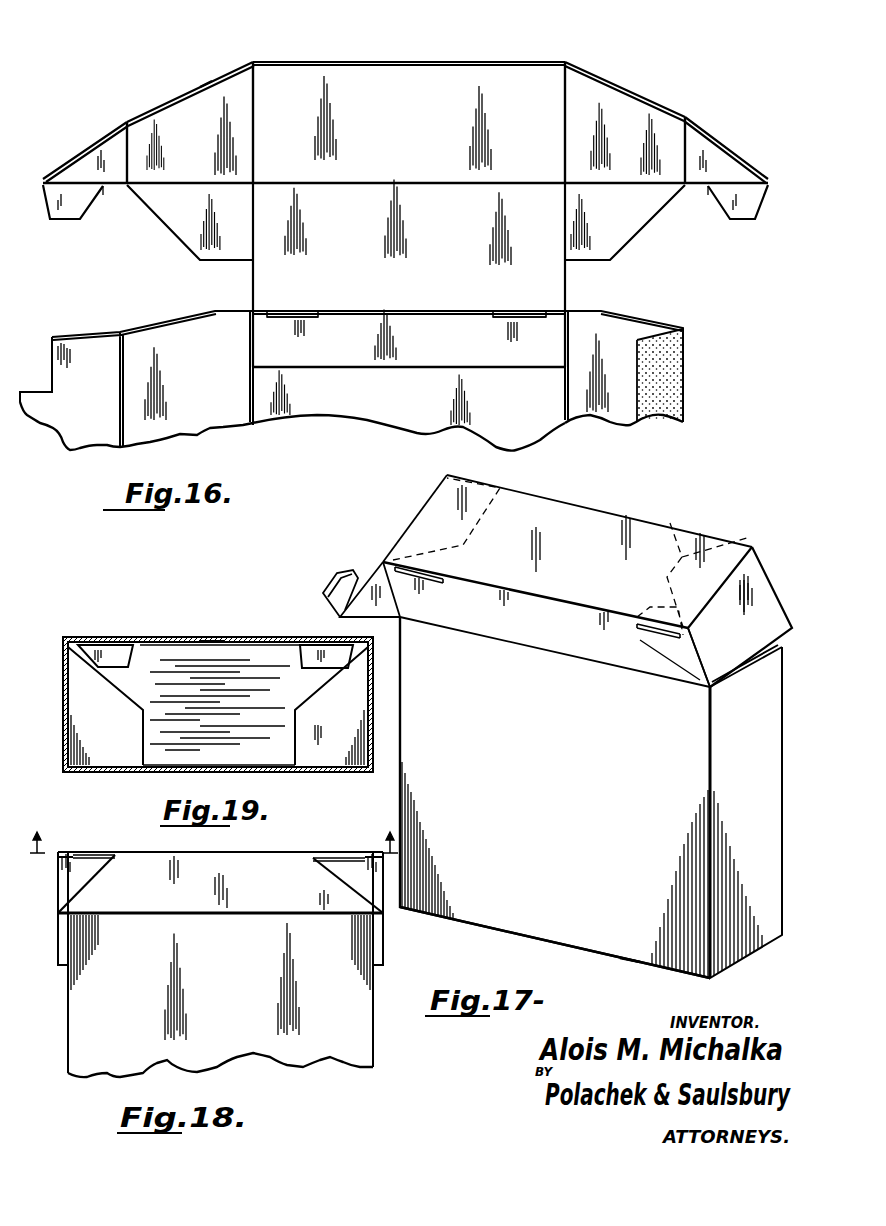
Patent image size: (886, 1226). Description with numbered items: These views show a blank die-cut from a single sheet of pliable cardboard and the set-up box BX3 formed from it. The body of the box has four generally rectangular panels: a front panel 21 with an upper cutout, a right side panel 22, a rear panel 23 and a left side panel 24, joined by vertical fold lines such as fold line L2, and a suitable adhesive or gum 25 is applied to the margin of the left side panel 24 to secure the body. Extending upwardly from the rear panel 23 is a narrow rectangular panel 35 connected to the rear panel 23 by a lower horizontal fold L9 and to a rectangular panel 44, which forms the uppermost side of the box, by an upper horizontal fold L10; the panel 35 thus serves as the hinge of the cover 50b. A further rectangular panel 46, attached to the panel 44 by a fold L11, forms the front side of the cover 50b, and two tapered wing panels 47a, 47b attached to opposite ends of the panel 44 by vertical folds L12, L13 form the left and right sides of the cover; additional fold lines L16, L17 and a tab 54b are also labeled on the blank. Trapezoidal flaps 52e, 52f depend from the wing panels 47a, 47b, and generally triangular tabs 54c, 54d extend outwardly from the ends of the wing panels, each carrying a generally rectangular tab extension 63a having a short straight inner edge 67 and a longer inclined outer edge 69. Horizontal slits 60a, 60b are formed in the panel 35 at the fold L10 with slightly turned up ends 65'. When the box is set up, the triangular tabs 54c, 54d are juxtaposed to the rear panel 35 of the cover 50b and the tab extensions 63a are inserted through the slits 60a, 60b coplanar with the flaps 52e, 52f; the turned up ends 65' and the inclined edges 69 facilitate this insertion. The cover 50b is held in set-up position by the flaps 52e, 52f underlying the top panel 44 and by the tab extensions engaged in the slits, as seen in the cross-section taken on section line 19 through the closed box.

In FIG. 16, the set-up box BX3 is at (213, 78).
In FIG. 17, the set-up box BX3 is at (630, 962).
In FIG. 19, the set-up box BX3 is at (211, 638).
In FIG. 18, the set-up box BX3 is at (310, 860).
In FIG. 16, the vertical fold L12 is at (256, 96).
In FIG. 16, the vertical fold L13 is at (563, 84).
In FIG. 16, the fold line L16 is at (123, 145).
In FIG. 17, the fold line L16 is at (693, 683).
In FIG. 16, the fold line L17 is at (688, 127).
In FIG. 16, the fold L11 is at (407, 180).
In FIG. 16, the horizontal fold L10 is at (445, 312).
In FIG. 16, the horizontal fold L9 is at (368, 375).
In FIG. 17, the horizontal fold L9 is at (620, 667).
In FIG. 18, the horizontal fold L9 is at (257, 917).
In FIG. 17, the vertical fold line L2 is at (707, 948).
In FIG. 16, the rectangular panel 46 is at (370, 85).
In FIG. 19, the rectangular panel 46 is at (222, 772).
In FIG. 16, the tapered wing panel 47a is at (183, 118).
In FIG. 17, the tapered wing panel 47a is at (760, 600).
In FIG. 18, the tapered wing panel 47a is at (383, 958).
In FIG. 16, the tapered wing panel 47b is at (628, 118).
In FIG. 18, the tapered wing panel 47b is at (57, 947).
In FIG. 16, the triangular tab 54c is at (90, 166).
In FIG. 17, the triangular tab 54c is at (685, 657).
In FIG. 18, the triangular tab 54c is at (373, 897).
In FIG. 16, the triangular tab 54d is at (717, 160).
In FIG. 17, the triangular tab 54d is at (388, 604).
In FIG. 18, the corner flap 54b is at (73, 878).
In FIG. 16, the inclined outer edge 69 is at (47, 210).
In FIG. 19, the inclined outer edge 69 is at (133, 660).
In FIG. 16, the straight inner edge 67 is at (108, 190).
In FIG. 16, the tab extension 63a is at (72, 208).
In FIG. 17, the tab extension 63a is at (330, 590).
In FIG. 19, the tab extension 63a is at (107, 652).
In FIG. 16, the trapezoidal flap 52e is at (183, 216).
In FIG. 17, the trapezoidal flap 52e is at (670, 523).
In FIG. 19, the trapezoidal flap 52e is at (105, 743).
In FIG. 16, the trapezoidal flap 52f is at (610, 258).
In FIG. 17, the trapezoidal flap 52f is at (497, 492).
In FIG. 19, the trapezoidal flap 52f is at (330, 753).
In FIG. 16, the rectangular panel 44 is at (262, 268).
In FIG. 19, the rectangular panel 44 is at (273, 753).
In FIG. 16, the turned up slit end 65' is at (370, 300).
In FIG. 17, the turned up slit end 65' is at (564, 625).
In FIG. 16, the horizontal slit 60a is at (316, 318).
In FIG. 18, the horizontal slit 60a is at (93, 852).
In FIG. 16, the horizontal slit 60b is at (505, 318).
In FIG. 17, the horizontal slit 60b is at (436, 590).
In FIG. 18, the horizontal slit 60b is at (345, 853).
In FIG. 16, the narrow rectangular panel 35 is at (418, 348).
In FIG. 17, the narrow rectangular panel 35 is at (553, 633).
In FIG. 19, the narrow rectangular panel 35 is at (253, 640).
In FIG. 18, the narrow rectangular panel 35 is at (235, 865).
In FIG. 17, the box cover 50b is at (636, 516).
In FIG. 19, the box cover 50b is at (332, 636).
In FIG. 18, the box cover 50b is at (268, 872).
In FIG. 16, the front panel 21 is at (83, 430).
In FIG. 16, the right side panel 22 is at (210, 420).
In FIG. 17, the right side panel 22 is at (763, 818).
In FIG. 16, the rear panel 23 is at (490, 415).
In FIG. 17, the rear panel 23 is at (513, 920).
In FIG. 16, the left side panel 24 is at (625, 415).
In FIG. 16, the adhesive 25 is at (690, 398).
In FIG. 18, the section line 19 is at (214, 855).